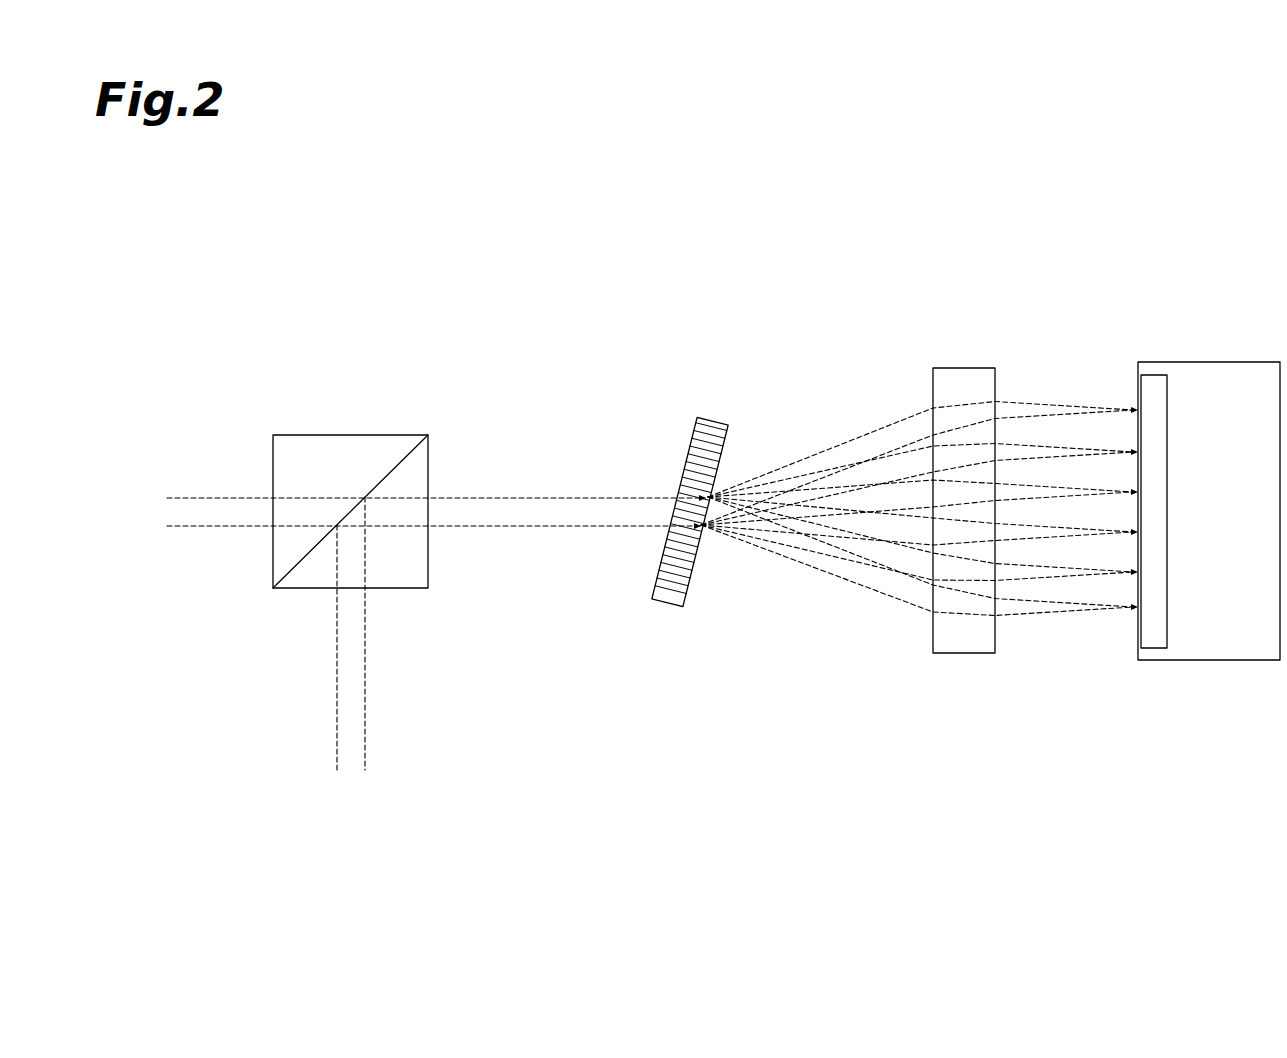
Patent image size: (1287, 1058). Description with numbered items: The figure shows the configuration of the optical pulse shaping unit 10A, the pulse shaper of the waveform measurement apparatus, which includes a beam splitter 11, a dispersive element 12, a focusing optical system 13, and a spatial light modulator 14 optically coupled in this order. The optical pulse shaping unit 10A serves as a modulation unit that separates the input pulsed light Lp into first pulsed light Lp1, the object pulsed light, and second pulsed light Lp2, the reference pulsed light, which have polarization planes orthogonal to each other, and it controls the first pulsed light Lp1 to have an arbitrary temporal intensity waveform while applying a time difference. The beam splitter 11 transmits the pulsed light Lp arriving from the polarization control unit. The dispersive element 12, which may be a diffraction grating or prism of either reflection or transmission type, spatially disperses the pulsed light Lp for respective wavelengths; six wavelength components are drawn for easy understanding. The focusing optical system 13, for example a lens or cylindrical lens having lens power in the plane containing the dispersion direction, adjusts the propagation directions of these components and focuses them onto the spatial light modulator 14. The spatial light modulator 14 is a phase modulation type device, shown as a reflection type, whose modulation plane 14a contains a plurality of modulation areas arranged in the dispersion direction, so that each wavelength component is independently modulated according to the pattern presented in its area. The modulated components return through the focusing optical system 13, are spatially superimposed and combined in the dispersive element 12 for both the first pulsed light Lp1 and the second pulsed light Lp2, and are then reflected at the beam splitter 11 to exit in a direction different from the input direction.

The optical pulse shaping unit 10A is at (1140, 221).
The beam splitter 11 is at (329, 431).
The dispersive element 12 is at (720, 413).
The focusing optical system 13 is at (967, 366).
The spatial light modulator 14 is at (1190, 517).
The modulation plane 14a is at (1138, 636).
The pulsed light Lp is at (202, 529).
The first pulsed light Lp1 is at (367, 712).
The second pulsed light Lp2 is at (432, 633).